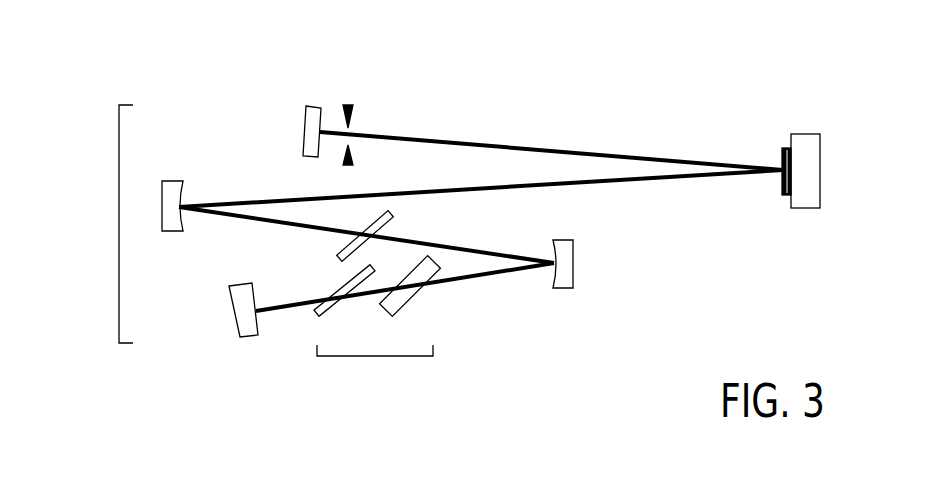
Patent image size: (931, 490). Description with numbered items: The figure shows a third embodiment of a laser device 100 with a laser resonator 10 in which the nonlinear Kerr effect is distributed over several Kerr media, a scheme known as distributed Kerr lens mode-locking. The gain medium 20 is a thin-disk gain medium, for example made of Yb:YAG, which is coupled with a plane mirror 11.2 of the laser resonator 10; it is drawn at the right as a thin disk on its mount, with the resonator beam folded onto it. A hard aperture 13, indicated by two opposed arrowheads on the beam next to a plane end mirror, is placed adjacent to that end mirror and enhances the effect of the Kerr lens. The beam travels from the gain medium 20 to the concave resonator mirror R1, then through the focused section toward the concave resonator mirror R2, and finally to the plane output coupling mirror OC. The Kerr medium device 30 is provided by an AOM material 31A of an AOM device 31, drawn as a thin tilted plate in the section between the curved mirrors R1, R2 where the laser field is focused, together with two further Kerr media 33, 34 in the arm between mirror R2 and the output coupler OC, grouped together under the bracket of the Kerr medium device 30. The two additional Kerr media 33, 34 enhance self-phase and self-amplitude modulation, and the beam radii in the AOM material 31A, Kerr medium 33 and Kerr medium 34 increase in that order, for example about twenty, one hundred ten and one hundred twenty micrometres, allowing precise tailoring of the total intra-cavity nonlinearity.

The laser device 100 is at (130, 69).
The laser resonator 10 is at (119, 223).
The hard aperture 13 is at (348, 105).
The gain medium 20 is at (783, 150).
The AOM device 31 is at (361, 232).
The AOM material 31A is at (365, 236).
The Kerr medium device 30 is at (375, 356).
The Kerr medium 33 is at (323, 310).
The Kerr medium 34 is at (418, 276).
The plane mirror 11.2 is at (565, 287).
The concave resonator mirror R1 is at (156, 193).
The concave resonator mirror R2 is at (581, 262).
The output coupling mirror OC is at (225, 310).